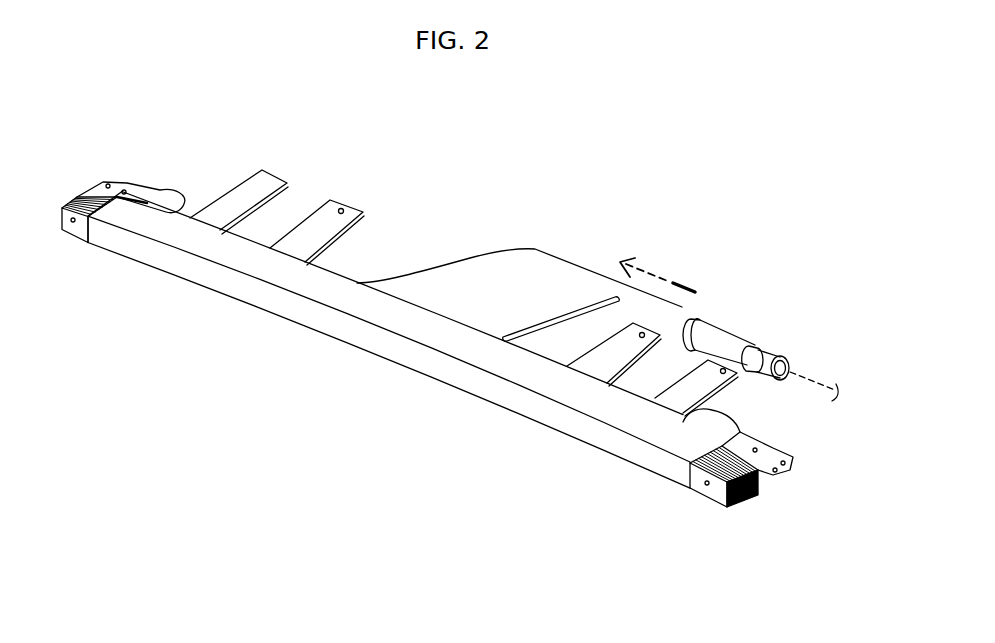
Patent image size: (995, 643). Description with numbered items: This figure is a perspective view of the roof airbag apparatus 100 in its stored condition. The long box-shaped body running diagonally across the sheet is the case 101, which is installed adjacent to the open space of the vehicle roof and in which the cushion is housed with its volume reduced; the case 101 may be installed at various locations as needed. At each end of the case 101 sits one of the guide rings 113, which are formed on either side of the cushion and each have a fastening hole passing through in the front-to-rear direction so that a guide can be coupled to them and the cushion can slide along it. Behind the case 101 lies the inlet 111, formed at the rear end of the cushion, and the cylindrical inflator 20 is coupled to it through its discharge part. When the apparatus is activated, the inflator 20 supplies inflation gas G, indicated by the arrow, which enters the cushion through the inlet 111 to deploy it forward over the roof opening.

The roof airbag apparatus 100 is at (422, 328).
The case 101 is at (443, 333).
The inlet 111 is at (492, 277).
The guide rings 113 is at (93, 200).
The inflator 20 is at (722, 343).
The inflation gas G is at (680, 283).